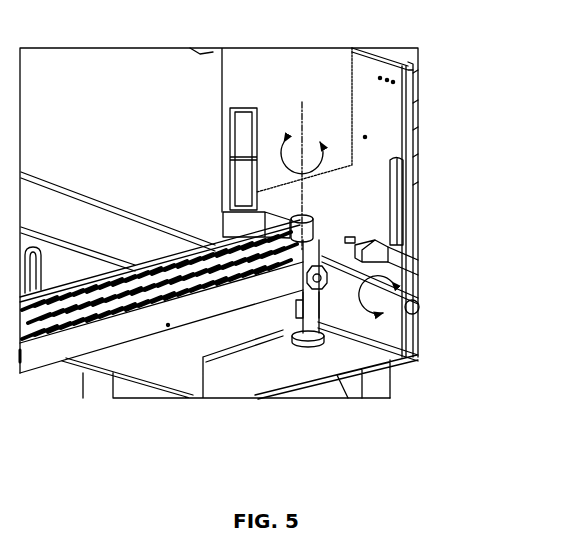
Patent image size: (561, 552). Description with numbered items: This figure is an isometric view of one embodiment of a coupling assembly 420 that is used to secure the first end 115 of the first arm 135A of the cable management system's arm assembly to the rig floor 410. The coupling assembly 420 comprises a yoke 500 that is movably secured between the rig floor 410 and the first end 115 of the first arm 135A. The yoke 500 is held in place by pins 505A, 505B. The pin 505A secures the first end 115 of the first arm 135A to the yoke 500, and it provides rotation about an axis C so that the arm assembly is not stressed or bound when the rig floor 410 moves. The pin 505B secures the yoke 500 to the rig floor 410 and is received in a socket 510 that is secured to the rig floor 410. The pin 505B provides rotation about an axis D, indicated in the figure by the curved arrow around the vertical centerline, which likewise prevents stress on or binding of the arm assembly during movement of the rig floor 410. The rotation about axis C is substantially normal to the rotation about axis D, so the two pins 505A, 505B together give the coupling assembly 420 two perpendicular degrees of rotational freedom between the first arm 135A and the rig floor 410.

The coupling assembly 420 is at (184, 162).
The first end 115 is at (199, 242).
The pin 505B is at (314, 214).
The rig floor 410 is at (353, 269).
The first arm 135A is at (180, 333).
The pin 505A is at (301, 304).
The socket 510 is at (304, 343).
The yoke 500 is at (318, 285).
The axis D is at (302, 164).